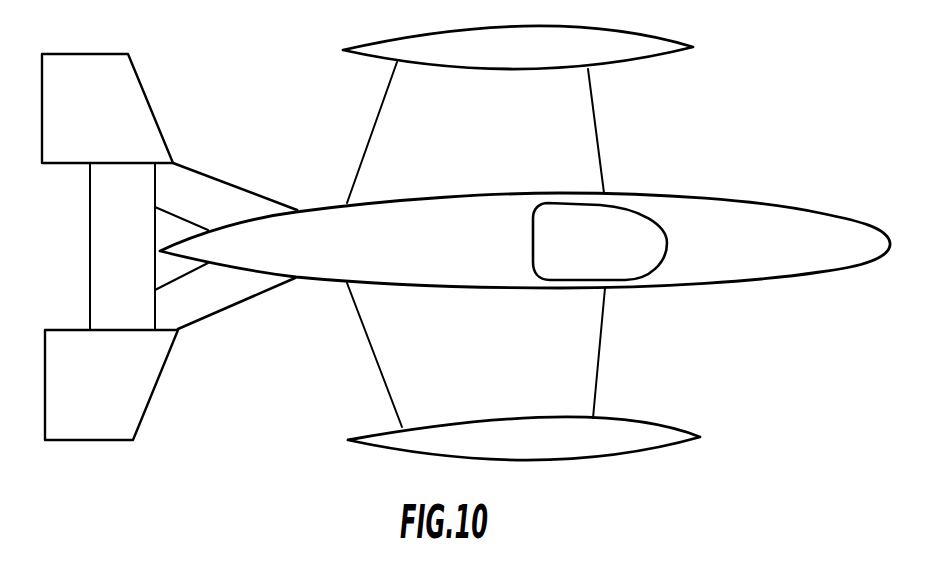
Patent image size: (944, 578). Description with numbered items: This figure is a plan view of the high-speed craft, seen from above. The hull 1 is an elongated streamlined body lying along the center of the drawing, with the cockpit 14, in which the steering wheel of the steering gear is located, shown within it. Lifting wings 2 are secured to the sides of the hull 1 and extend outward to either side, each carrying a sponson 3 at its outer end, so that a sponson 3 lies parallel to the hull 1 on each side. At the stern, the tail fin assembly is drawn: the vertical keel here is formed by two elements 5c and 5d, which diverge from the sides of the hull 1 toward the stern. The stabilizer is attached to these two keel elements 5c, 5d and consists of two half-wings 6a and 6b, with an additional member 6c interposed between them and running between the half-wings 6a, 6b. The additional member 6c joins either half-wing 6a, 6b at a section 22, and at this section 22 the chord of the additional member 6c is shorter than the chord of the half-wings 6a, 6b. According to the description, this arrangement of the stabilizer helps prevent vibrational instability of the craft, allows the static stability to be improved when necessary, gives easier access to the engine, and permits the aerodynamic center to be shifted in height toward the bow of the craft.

The hull 1 is at (757, 263).
The lifting wings 2 is at (585, 315).
The sponsons 3 is at (630, 55).
The cockpit 14 is at (643, 258).
The keel element 5c is at (237, 293).
The keel element 5d is at (223, 202).
The half-wing 6a is at (157, 347).
The half-wing 6b is at (138, 128).
The additional member 6c is at (105, 247).
The section 22 is at (137, 163).